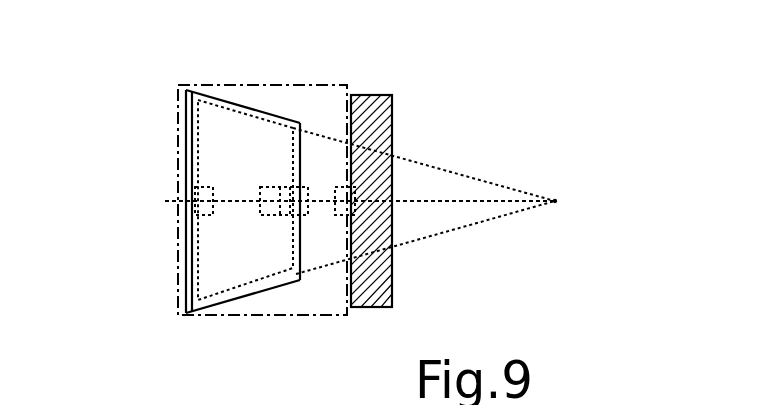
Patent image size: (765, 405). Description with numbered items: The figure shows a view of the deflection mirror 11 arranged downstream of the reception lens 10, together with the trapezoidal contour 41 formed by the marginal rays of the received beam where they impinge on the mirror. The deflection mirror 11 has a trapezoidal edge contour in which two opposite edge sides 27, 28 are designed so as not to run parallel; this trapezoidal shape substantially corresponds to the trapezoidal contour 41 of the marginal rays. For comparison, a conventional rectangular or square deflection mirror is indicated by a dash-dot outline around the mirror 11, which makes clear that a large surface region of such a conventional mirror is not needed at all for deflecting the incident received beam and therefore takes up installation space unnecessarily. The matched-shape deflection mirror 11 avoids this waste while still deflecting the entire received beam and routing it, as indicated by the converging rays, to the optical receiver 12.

The reception lens 10 is at (380, 128).
The deflection mirror 11 is at (180, 100).
The optical receiver 12 is at (556, 201).
The edge side 27 is at (262, 100).
The edge side 28 is at (258, 296).
The trapezoidal contour 41 is at (299, 145).